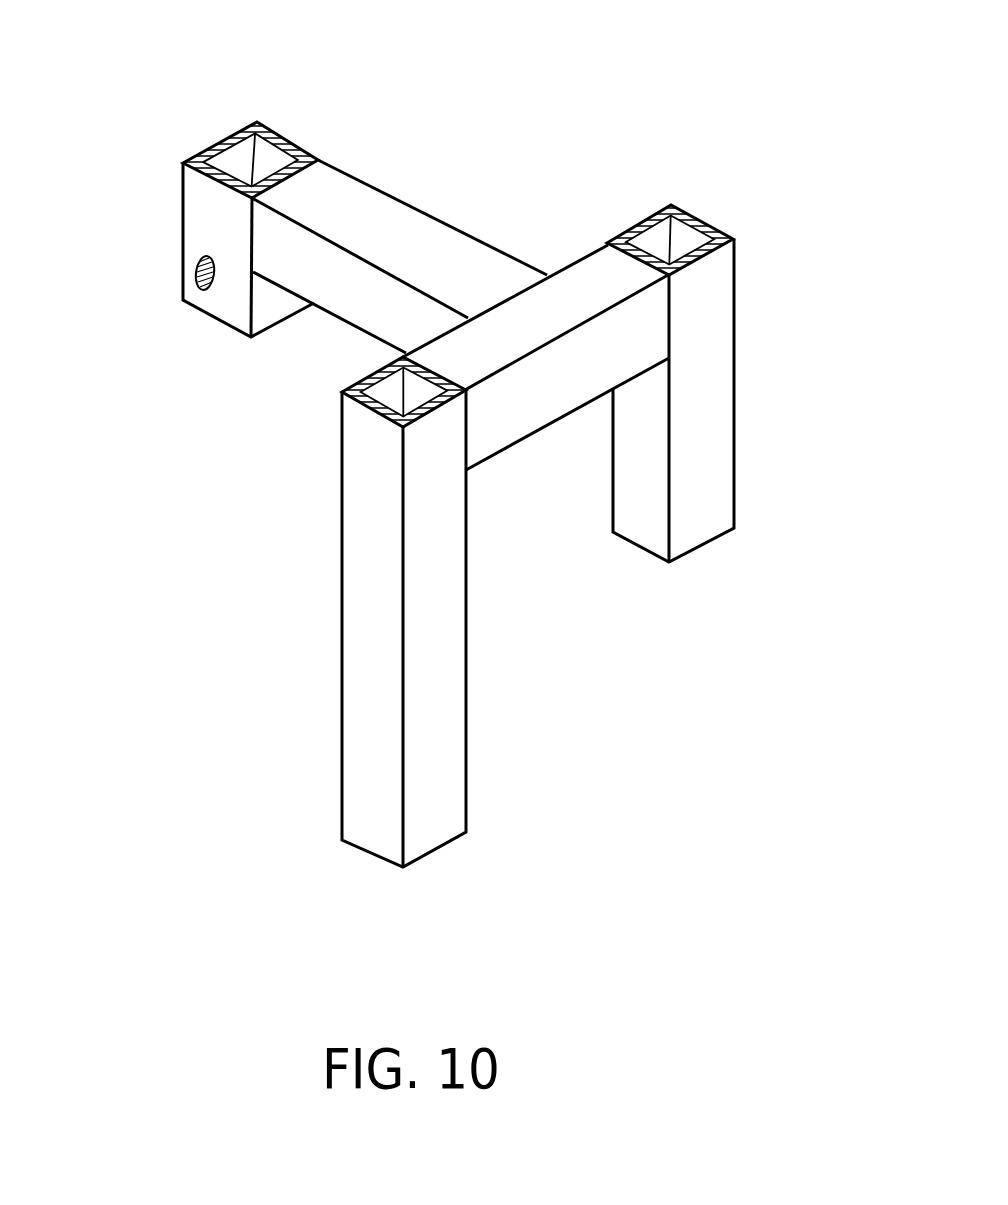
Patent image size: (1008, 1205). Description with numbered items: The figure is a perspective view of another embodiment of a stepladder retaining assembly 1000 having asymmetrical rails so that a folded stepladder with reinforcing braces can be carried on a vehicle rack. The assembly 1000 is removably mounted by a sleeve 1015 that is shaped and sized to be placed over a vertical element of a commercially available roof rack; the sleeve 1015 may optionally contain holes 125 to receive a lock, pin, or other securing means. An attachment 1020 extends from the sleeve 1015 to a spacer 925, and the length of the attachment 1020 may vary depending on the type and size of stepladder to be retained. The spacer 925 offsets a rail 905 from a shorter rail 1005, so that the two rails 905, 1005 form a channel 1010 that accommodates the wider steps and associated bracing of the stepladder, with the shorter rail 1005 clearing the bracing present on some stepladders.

The stepladder retaining assembly 1000 is at (432, 147).
The sleeve 1015 is at (215, 232).
The holes 125 is at (197, 280).
The attachment 1020 is at (468, 245).
The spacer 925 is at (632, 360).
The rail 905 is at (367, 755).
The shorter rail 1005 is at (700, 458).
The channel 1010 is at (567, 542).